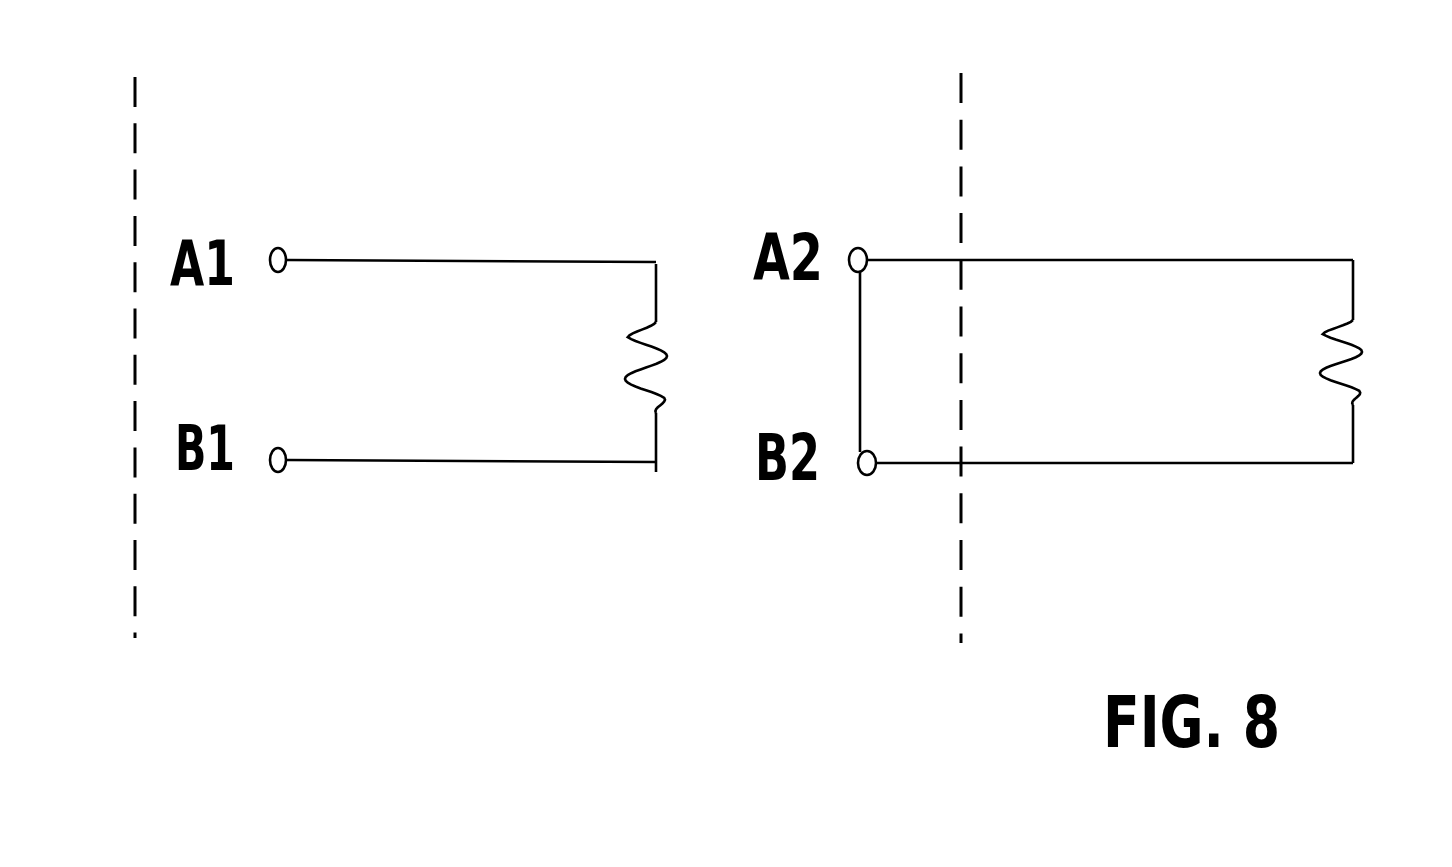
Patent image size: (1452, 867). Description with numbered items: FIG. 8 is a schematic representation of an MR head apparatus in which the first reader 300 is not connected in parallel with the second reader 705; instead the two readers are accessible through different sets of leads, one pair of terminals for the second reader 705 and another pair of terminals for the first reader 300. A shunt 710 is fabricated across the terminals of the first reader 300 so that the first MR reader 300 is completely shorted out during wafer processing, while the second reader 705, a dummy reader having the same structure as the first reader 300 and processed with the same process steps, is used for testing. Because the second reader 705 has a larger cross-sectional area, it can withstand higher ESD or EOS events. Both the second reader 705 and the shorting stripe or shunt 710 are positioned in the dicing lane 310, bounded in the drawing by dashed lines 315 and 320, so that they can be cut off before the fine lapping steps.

The first interface boundary (transmitting side) 315 is at (136, 145).
The dicing lane 310 is at (1099, 245).
The second interface boundary (receiving side) 320 is at (961, 186).
The first reader 300 is at (1350, 338).
The second reader 705 is at (700, 420).
The shunt 710 is at (858, 388).